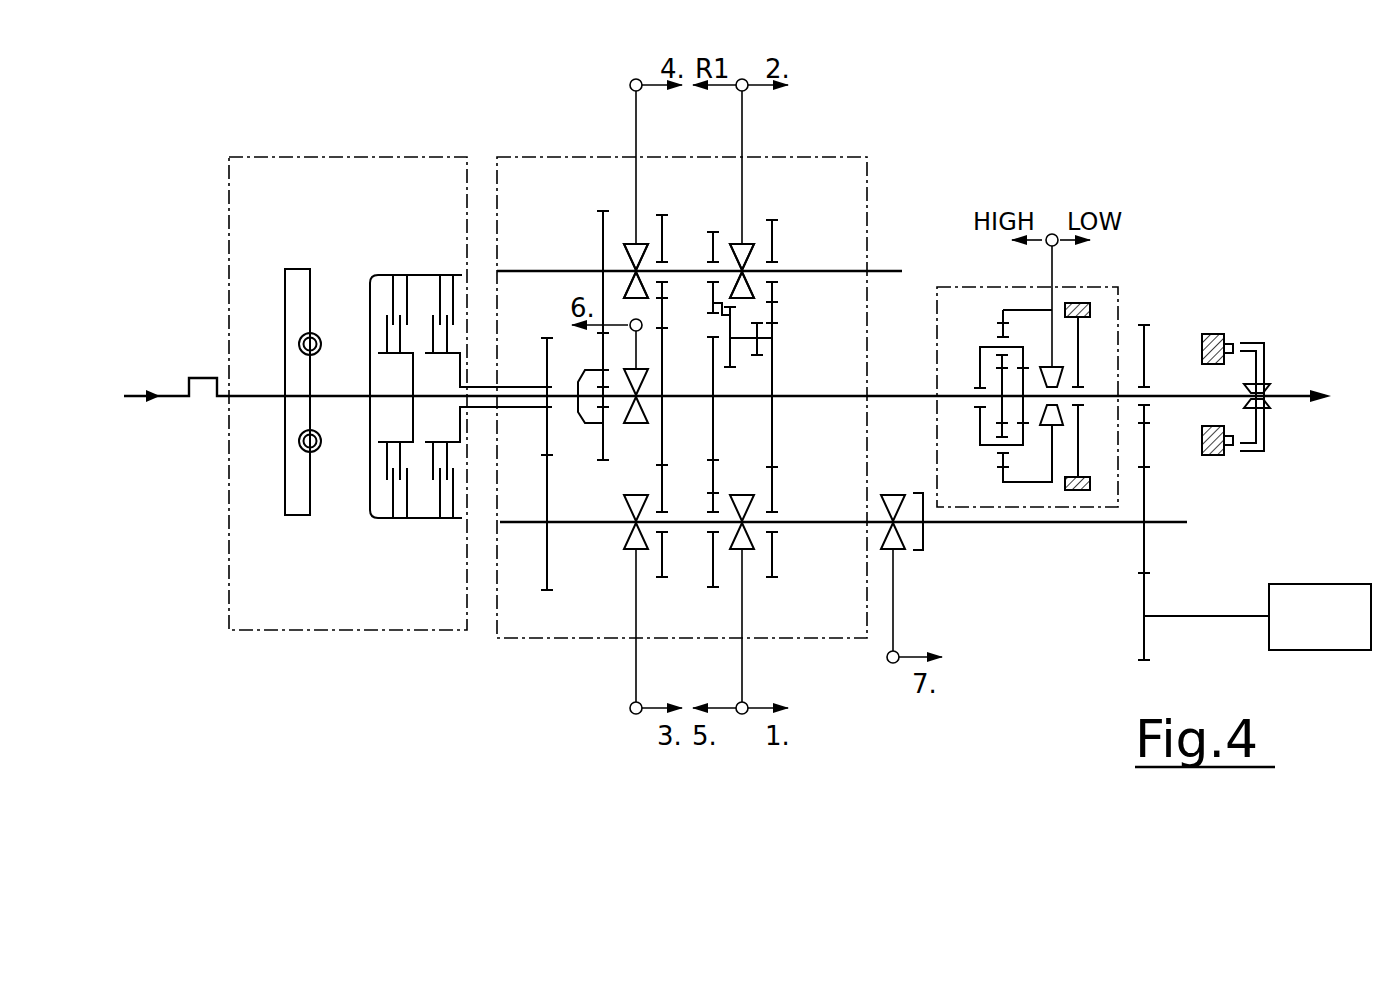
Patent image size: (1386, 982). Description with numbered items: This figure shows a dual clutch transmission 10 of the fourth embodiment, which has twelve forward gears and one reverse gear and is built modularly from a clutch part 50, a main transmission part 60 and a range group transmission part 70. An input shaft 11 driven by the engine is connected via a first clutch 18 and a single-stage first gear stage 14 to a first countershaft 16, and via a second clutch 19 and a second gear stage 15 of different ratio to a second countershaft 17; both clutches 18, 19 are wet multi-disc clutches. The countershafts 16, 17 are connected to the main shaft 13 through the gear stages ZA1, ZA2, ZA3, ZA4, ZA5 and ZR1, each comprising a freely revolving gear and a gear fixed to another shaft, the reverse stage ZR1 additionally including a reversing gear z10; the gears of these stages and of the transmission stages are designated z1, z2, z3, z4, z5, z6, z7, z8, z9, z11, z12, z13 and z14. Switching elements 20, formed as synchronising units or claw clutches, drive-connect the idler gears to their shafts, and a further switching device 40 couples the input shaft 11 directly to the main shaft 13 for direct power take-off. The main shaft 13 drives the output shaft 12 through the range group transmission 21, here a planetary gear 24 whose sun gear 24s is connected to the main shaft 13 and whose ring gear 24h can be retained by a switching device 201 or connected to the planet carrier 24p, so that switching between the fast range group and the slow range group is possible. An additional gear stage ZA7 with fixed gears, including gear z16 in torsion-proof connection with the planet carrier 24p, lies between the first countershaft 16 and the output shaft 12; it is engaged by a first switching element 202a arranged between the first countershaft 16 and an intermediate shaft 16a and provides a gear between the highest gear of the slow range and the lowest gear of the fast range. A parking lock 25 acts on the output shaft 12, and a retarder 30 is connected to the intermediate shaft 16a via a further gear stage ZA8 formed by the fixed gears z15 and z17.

The dual clutch transmission 10 is at (923, 161).
The input shaft 11 is at (263, 399).
The output shaft 12 is at (1168, 400).
The main shaft 13 is at (828, 392).
The first gear stage 14 is at (549, 484).
The second gear stage 15 is at (601, 242).
The first countershaft 16 is at (830, 526).
The intermediate shaft 16a is at (1105, 525).
The second countershaft 17 is at (832, 268).
The first clutch 18 is at (443, 270).
The second clutch 19 is at (393, 270).
The switching element 20 is at (632, 242).
The range group transmission 21 is at (1053, 496).
The planetary gear 24 is at (965, 408).
The ring gear 24h is at (1027, 309).
The planet carrier 24p is at (978, 423).
The sun gear 24s is at (1003, 407).
The parking lock 25 is at (1263, 345).
The retarder braking device 30 is at (1339, 636).
The further switching device 40 is at (637, 426).
The clutch part 50 is at (406, 641).
The main transmission part 60 is at (591, 641).
The range group transmission part 70 is at (965, 282).
The switching device 201 is at (1062, 369).
The first switching element 202a is at (898, 546).
The gear stage ZA1 is at (780, 562).
The gear stage ZA2 is at (793, 249).
The gear stage ZA3 is at (677, 569).
The gear stage ZA4 is at (645, 222).
The gear stage ZA5 is at (722, 570).
The additional gear stage ZA7 is at (1172, 329).
The further gear stage ZA8 is at (1140, 598).
The reverse gear stage ZR1 is at (702, 236).
The gear z1 is at (548, 381).
The gear z2 is at (548, 541).
The gear z3 is at (671, 464).
The gear z4 is at (661, 401).
The gear z5 is at (774, 398).
The gear z6 is at (790, 417).
The gear z7 is at (665, 399).
The gear z8 is at (679, 420).
The gear z9 is at (715, 255).
The reversing gear z10 is at (737, 381).
The gear z11 is at (766, 337).
The gear z12 is at (952, 386).
The gear z13 is at (976, 331).
The gear z14 is at (975, 438).
The fixed gear z15 is at (1170, 498).
The gear z16 is at (1168, 356).
The fixed gear z17 is at (1170, 618).